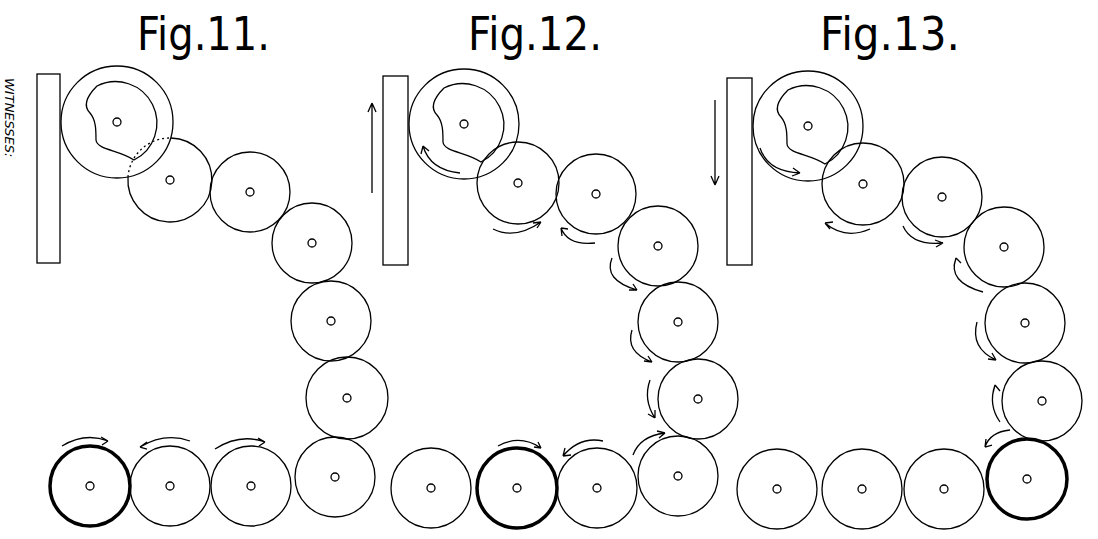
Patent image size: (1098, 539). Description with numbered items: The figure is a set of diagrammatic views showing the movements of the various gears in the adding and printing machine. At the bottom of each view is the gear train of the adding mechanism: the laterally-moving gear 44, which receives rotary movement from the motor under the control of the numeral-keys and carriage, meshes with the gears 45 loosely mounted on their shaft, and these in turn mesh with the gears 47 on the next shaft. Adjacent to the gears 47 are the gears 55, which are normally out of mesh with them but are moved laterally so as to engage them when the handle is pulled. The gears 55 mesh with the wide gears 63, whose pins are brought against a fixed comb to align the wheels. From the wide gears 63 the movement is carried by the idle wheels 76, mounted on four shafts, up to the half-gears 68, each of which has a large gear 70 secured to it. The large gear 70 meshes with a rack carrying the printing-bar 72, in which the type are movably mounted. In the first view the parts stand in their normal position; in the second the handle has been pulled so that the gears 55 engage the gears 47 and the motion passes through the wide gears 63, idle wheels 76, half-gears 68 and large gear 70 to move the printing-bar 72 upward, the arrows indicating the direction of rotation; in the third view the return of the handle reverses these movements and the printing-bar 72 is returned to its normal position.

In FIG. 11, the laterally-moving gear 44 is at (91, 517).
In FIG. 12, the laterally-moving gear 44 is at (430, 522).
In FIG. 13, the laterally-moving gear 44 is at (777, 455).
In FIG. 11, the gears 45 is at (170, 518).
In FIG. 12, the gears 45 is at (519, 450).
In FIG. 13, the gears 45 is at (862, 455).
In FIG. 11, the gears 47 is at (252, 518).
In FIG. 12, the gears 47 is at (592, 456).
In FIG. 13, the gears 47 is at (944, 455).
In FIG. 11, the gears 55 is at (337, 515).
In FIG. 12, the gears 55 is at (677, 512).
In FIG. 13, the gears 55 is at (1028, 515).
In FIG. 11, the wide gears 63 is at (378, 399).
In FIG. 12, the wide gears 63 is at (737, 398).
In FIG. 13, the wide gears 63 is at (1010, 394).
In FIG. 11, the half-gears 68 is at (143, 113).
In FIG. 12, the half-gears 68 is at (492, 117).
In FIG. 13, the half-gears 68 is at (835, 111).
In FIG. 11, the large gear 70 is at (153, 90).
In FIG. 12, the large gear 70 is at (502, 90).
In FIG. 13, the large gear 70 is at (843, 91).
In FIG. 11, the printing-bar 72 is at (43, 192).
In FIG. 12, the printing-bar 72 is at (392, 214).
In FIG. 13, the printing-bar 72 is at (739, 206).
In FIG. 11, the idle wheels 76 is at (298, 312).
In FIG. 12, the idle wheels 76 is at (645, 312).
In FIG. 13, the idle wheels 76 is at (993, 310).